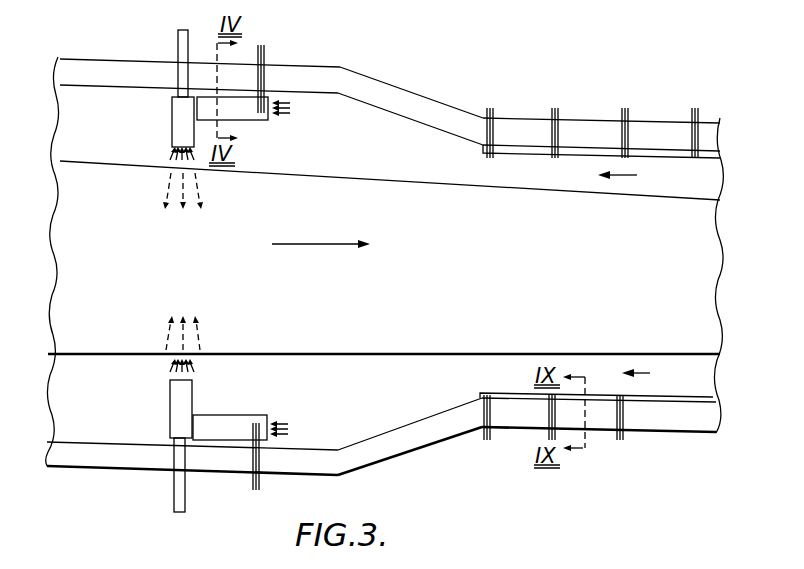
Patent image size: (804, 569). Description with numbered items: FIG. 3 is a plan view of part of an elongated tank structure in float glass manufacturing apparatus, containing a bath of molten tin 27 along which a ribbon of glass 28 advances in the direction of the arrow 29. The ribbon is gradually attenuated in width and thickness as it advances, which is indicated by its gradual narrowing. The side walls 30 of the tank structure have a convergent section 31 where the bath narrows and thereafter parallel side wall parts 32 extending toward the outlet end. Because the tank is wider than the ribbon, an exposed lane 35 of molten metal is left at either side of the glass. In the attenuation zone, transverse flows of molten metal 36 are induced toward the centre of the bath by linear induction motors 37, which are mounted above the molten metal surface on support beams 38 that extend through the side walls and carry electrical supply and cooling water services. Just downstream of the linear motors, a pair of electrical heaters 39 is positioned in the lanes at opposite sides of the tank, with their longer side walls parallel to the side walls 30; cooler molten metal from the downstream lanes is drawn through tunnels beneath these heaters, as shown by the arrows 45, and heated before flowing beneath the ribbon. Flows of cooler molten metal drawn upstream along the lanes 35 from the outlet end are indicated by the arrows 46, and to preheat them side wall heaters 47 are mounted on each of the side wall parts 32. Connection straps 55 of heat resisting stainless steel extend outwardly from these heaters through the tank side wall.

The bath of molten tin 27 is at (90, 105).
The ribbon of glass 28 is at (502, 259).
The arrow 29 is at (327, 243).
The side walls 30 is at (132, 72).
The convergent section 31 is at (435, 107).
The side wall parts 32 is at (667, 130).
The exposed lane 35 is at (373, 152).
The transverse flows of molten metal 36 is at (200, 188).
The linear induction motors 37 is at (178, 130).
The support beams 38 is at (180, 50).
The heaters 39 is at (237, 113).
The arrows 45 is at (283, 112).
The arrows 46 is at (637, 175).
The side wall heaters 47 is at (510, 148).
The connection straps 55 is at (558, 112).